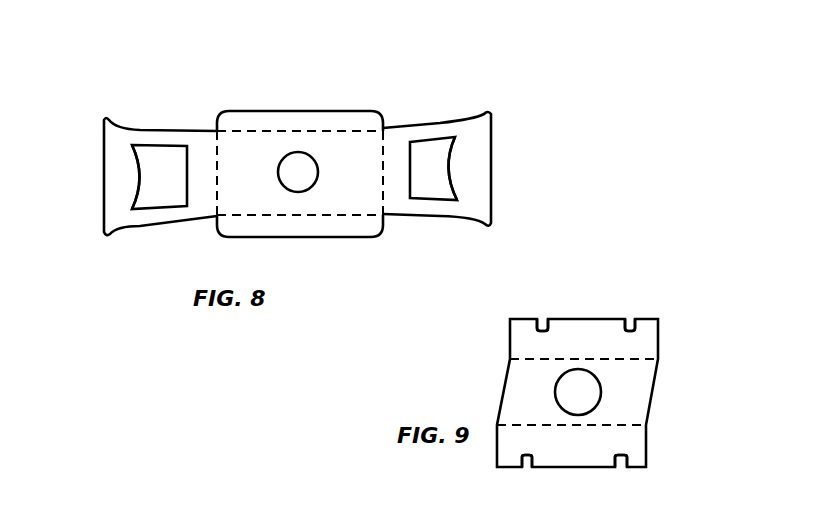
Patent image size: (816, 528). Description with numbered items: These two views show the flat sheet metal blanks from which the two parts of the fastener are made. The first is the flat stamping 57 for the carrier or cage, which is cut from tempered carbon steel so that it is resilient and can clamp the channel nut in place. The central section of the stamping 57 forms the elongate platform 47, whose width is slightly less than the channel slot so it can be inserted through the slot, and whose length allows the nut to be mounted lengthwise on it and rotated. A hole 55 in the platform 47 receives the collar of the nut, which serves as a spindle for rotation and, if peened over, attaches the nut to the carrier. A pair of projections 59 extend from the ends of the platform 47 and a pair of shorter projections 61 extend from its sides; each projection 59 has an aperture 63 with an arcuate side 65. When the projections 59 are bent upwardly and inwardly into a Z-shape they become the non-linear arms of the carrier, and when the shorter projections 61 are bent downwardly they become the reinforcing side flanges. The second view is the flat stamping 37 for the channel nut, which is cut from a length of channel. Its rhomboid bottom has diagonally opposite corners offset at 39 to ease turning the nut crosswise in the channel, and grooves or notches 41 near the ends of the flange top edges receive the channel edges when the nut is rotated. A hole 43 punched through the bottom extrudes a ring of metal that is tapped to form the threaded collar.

In FIG. 9, the flat stamping 37 is at (587, 310).
In FIG. 9, the offset corners 39 is at (510, 359).
In FIG. 9, the notches 41 is at (542, 326).
In FIG. 9, the hole 43 is at (592, 394).
In FIG. 8, the platform 47 is at (214, 218).
In FIG. 8, the hole 55 is at (300, 152).
In FIG. 8, the flat stamping 57 is at (399, 98).
In FIG. 8, the projections 59 is at (103, 167).
In FIG. 8, the shorter projections 61 is at (253, 111).
In FIG. 8, the aperture 63 is at (160, 147).
In FIG. 8, the arcuate side 65 is at (137, 174).